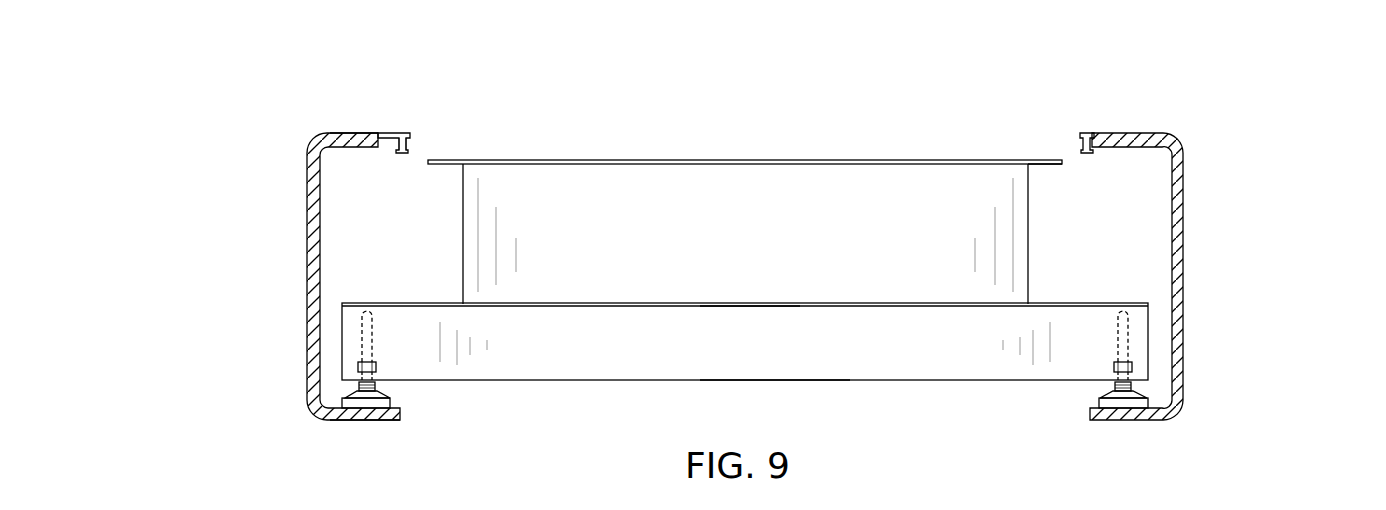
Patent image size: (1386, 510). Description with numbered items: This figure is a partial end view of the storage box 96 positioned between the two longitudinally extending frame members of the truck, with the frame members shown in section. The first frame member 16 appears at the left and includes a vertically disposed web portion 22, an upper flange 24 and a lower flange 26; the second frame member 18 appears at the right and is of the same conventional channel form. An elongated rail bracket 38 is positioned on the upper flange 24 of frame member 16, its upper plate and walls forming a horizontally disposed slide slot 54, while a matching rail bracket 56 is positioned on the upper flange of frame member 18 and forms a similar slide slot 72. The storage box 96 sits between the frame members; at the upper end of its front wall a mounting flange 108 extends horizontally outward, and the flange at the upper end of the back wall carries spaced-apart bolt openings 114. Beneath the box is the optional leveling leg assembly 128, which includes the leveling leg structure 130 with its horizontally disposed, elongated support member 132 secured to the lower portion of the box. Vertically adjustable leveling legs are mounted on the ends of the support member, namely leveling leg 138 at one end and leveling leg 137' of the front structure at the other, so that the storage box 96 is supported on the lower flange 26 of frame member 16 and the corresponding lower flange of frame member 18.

The first frame member 16 is at (278, 170).
The second frame member 18 is at (1205, 244).
The web portion 22 is at (307, 232).
The upper flange 24 is at (346, 133).
The lower flange 26 is at (355, 415).
The rail bracket 38 is at (405, 122).
The slide slot 54 is at (415, 138).
The rail bracket 56 is at (1098, 122).
The slide slot 72 is at (1070, 140).
The storage box 96 is at (852, 153).
The mounting flange 108 is at (1050, 165).
The bolt openings 114 is at (455, 159).
The leveling leg assembly 128 is at (654, 392).
The rear leveling leg structure 130 is at (773, 372).
The support member 132 is at (766, 351).
The leveling leg 137' is at (1049, 375).
The leveling leg 138 is at (383, 403).